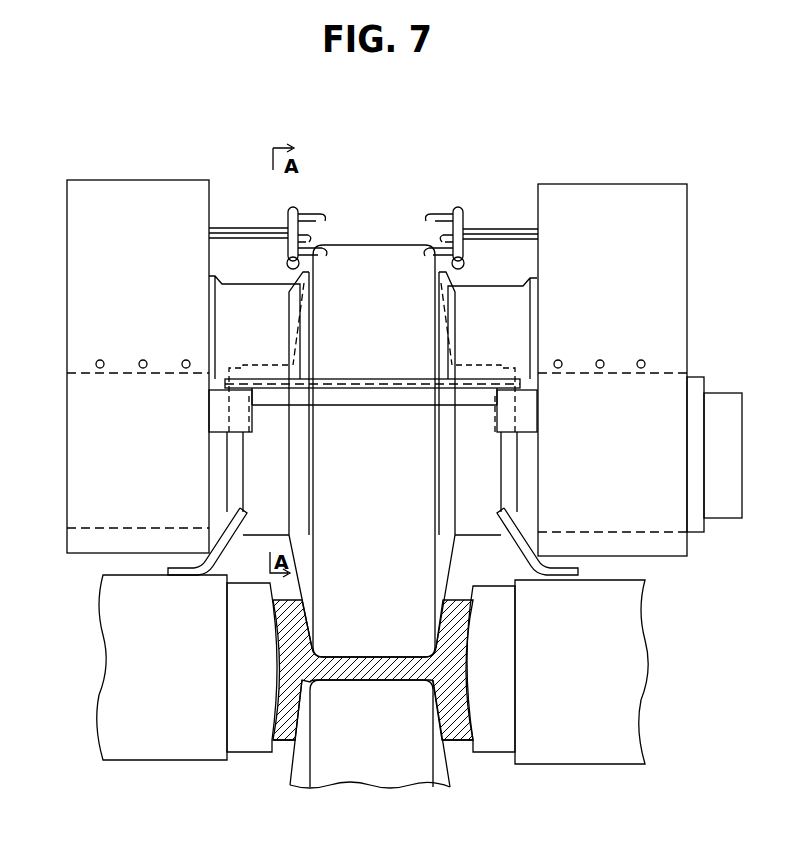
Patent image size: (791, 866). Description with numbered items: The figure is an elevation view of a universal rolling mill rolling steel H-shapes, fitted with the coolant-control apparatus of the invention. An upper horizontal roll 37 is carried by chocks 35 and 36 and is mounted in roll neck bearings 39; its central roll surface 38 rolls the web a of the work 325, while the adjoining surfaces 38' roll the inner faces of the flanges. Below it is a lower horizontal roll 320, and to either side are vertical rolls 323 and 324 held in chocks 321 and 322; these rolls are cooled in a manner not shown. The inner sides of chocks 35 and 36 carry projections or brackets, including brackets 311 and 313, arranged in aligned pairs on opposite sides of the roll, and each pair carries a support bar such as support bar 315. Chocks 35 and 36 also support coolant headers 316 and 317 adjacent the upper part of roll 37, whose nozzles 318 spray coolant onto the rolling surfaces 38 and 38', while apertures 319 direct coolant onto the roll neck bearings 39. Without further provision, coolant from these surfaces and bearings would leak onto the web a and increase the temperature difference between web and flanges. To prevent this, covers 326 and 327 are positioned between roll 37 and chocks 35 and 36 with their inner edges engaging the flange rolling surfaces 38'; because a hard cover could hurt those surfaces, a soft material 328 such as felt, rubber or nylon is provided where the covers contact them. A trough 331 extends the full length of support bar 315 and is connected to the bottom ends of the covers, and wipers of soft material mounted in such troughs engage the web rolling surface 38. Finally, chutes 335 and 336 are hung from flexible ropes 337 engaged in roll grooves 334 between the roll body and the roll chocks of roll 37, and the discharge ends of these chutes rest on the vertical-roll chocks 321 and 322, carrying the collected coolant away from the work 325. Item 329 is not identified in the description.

The chock 35 is at (600, 198).
The chock 36 is at (128, 188).
The upper horizontal roll 37 is at (379, 242).
The web rolling surface 38 is at (374, 528).
The flange rolling surfaces 38' is at (372, 460).
The roll neck bearings 39 is at (94, 530).
The bracket 311 is at (532, 414).
The bracket 313 is at (216, 411).
The support bar 315 is at (405, 406).
The coolant header 316 is at (460, 216).
The coolant header 317 is at (294, 215).
The nozzles 318 is at (316, 216).
The apertures 319 is at (96, 362).
The lower horizontal roll 320 is at (409, 780).
The chock 321 is at (584, 764).
The chock 322 is at (149, 761).
The vertical roll 323 is at (494, 761).
The vertical roll 324 is at (241, 761).
The work 325 is at (284, 746).
The cover 326 is at (480, 282).
The cover 327 is at (236, 282).
The soft material 328 is at (260, 302).
The hidden guide line 329 is at (444, 340).
The trough 331 is at (346, 389).
The roll grooves 334 is at (240, 540).
The chute 335 is at (560, 574).
The chute 336 is at (178, 572).
The ropes 337 is at (505, 492).
The web a is at (378, 656).